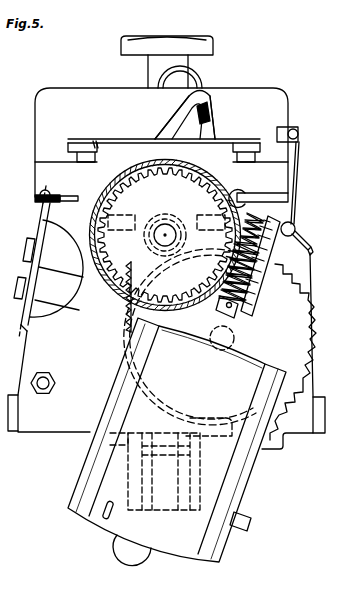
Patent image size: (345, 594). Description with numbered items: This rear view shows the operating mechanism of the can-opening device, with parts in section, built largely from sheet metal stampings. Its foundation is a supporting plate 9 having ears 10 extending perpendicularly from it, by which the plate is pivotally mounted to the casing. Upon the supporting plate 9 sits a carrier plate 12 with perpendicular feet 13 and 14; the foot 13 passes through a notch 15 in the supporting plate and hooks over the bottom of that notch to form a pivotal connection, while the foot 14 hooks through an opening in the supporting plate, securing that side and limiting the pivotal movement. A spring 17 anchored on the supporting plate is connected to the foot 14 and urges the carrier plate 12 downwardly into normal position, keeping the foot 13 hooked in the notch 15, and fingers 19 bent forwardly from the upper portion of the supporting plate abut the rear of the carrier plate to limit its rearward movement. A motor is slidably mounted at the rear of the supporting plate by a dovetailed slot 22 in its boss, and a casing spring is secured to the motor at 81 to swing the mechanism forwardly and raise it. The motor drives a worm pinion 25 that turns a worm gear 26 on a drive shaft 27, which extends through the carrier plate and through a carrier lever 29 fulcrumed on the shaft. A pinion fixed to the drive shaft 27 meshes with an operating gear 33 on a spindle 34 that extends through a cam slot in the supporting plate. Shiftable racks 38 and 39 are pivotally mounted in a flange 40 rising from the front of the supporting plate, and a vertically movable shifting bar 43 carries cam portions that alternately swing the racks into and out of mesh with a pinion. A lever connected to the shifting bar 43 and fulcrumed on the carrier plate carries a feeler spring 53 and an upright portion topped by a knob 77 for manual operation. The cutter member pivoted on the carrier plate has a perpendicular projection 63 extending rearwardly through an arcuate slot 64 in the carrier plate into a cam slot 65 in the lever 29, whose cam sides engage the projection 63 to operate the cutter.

The supporting plate 9 is at (55, 433).
The ears 10 is at (18, 420).
The carrier plate 12 is at (289, 97).
The foot 13 is at (68, 196).
The foot 14 is at (270, 195).
The notch 15 is at (36, 194).
The spring 17 is at (296, 229).
The fingers 19 is at (80, 140).
The dovetailed slot 22 is at (153, 514).
The worm pinion 25 is at (258, 290).
The worm gear 26 is at (125, 270).
The drive shaft 27 is at (165, 228).
The carrier lever 29 is at (168, 117).
The operating gear 33 is at (126, 326).
The spindle 34 is at (217, 350).
The shiftable rack 38 is at (56, 268).
The shiftable rack 39 is at (57, 297).
The flange 40 is at (39, 217).
The shifting bar 43 is at (297, 160).
The spring 53 is at (199, 82).
The perpendicular projection 63 is at (211, 111).
The arcuate slot 64 is at (217, 136).
The cam slot 65 is at (172, 128).
The knob 77 is at (214, 45).
The spring attachment point on motor 81 is at (107, 518).